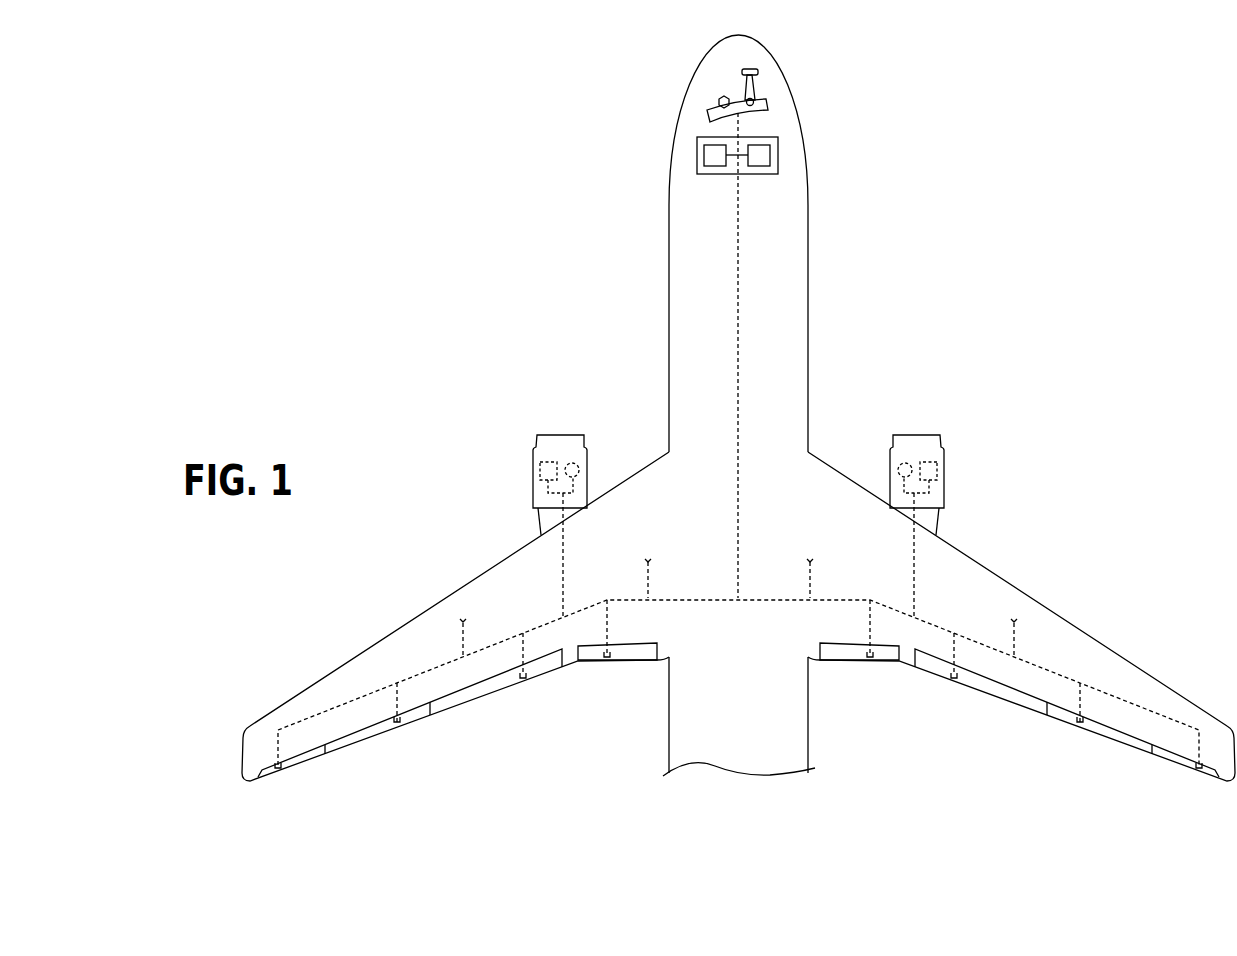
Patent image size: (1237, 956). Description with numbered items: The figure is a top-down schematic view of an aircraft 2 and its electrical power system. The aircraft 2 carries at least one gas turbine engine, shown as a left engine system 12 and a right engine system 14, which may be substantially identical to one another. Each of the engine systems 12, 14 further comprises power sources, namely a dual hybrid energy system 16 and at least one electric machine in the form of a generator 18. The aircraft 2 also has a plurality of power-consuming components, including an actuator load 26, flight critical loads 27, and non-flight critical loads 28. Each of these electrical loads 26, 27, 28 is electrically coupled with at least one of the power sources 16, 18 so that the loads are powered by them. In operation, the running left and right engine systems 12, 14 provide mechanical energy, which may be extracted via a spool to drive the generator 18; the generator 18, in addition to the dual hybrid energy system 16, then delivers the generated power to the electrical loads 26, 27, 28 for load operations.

The aircraft 2 is at (571, 59).
The left engine system 12 is at (560, 442).
The right engine system 14 is at (927, 447).
The dual hybrid energy system 16 is at (540, 463).
The generator 18 is at (580, 468).
The actuator load 26 is at (278, 769).
The flight critical loads 27 is at (707, 167).
The non-flight critical loads 28 is at (463, 619).